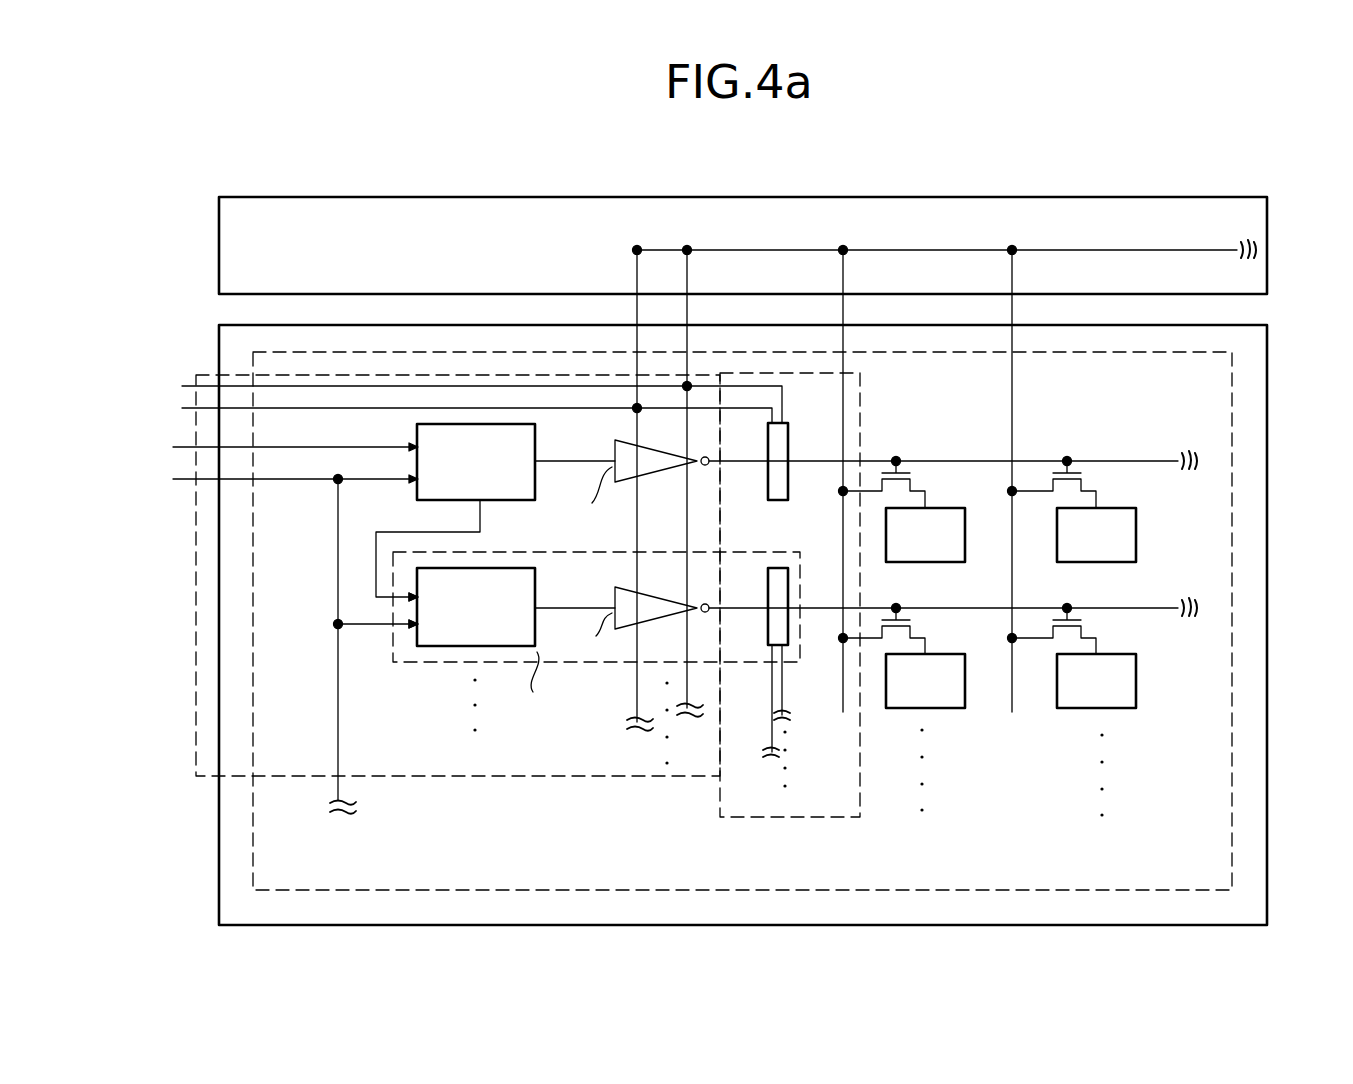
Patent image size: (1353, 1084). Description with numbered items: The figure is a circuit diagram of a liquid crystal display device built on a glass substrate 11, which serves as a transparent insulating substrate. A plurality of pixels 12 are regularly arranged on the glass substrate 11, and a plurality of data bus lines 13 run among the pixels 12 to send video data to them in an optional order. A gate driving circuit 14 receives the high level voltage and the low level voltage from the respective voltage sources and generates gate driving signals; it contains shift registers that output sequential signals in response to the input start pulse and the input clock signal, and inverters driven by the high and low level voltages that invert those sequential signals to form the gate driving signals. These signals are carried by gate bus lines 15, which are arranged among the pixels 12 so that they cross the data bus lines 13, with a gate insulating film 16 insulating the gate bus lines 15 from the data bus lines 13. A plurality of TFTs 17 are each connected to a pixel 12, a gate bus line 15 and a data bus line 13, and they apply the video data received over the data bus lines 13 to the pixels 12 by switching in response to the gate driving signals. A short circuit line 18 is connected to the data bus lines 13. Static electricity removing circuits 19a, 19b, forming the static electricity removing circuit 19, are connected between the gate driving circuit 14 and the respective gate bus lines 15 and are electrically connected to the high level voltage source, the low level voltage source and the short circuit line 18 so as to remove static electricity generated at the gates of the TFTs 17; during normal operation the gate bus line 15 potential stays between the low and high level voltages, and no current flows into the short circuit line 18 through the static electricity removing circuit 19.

The glass substrate 11 is at (1192, 215).
The pixel 12 is at (947, 530).
The data bus line 13 is at (843, 363).
The gate driving circuit 14 is at (415, 753).
The gate bus line 15 is at (877, 459).
The gate insulating film 16 is at (1232, 852).
The TFT 17 is at (912, 475).
The short circuit line 18 is at (937, 250).
The static electricity removing circuit 19 is at (805, 636).
The static electricity removing circuit 19a is at (788, 444).
The static electricity removing circuit 19b is at (778, 575).